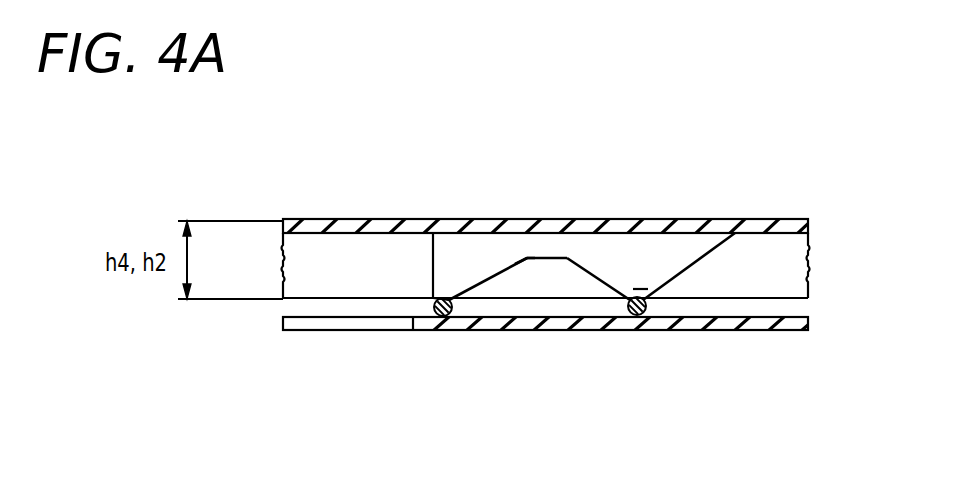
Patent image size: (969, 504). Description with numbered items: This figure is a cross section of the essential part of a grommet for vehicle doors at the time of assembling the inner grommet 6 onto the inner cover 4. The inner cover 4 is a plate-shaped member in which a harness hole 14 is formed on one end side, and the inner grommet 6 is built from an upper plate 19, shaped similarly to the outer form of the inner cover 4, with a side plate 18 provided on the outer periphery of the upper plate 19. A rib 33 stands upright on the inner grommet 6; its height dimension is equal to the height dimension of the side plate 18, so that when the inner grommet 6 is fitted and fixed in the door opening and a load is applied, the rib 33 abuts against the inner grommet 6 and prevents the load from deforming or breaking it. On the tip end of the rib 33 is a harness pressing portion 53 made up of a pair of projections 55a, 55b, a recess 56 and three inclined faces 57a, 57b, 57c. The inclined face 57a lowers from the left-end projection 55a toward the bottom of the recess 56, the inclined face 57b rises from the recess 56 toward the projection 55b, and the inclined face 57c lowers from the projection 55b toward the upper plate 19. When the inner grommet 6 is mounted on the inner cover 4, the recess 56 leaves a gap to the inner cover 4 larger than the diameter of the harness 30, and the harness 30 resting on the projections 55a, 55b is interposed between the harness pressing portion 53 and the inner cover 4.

The inner cover 4 is at (787, 329).
The inner grommet 6 is at (742, 218).
The harness hole 14 is at (397, 322).
The side plate 18 is at (788, 265).
The upper plate 19 is at (783, 220).
The harness 30 is at (449, 316).
The rib 33 is at (433, 262).
The harness pressing portion 53 is at (490, 282).
The projection 55a is at (430, 290).
The projection 55b is at (650, 290).
The recess 56 is at (545, 258).
The inclined face 57a is at (512, 258).
The inclined face 57b is at (610, 278).
The inclined face 57c is at (680, 272).